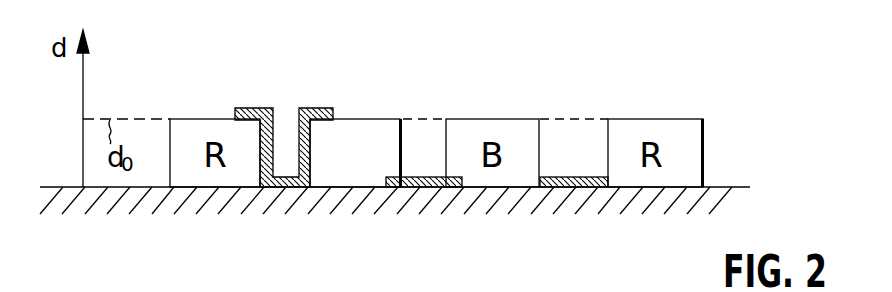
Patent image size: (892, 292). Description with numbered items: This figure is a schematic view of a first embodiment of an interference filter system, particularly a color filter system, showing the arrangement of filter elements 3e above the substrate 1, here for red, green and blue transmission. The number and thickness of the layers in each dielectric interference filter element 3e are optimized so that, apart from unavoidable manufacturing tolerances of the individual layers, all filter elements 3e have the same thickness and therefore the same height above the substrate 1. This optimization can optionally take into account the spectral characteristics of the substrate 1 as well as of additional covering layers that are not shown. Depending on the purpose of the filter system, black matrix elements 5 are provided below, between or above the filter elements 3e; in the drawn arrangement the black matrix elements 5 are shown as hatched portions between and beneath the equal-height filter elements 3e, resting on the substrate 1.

The substrate 1 is at (669, 242).
The filter element 3e is at (377, 120).
The black matrix element 5 is at (550, 188).